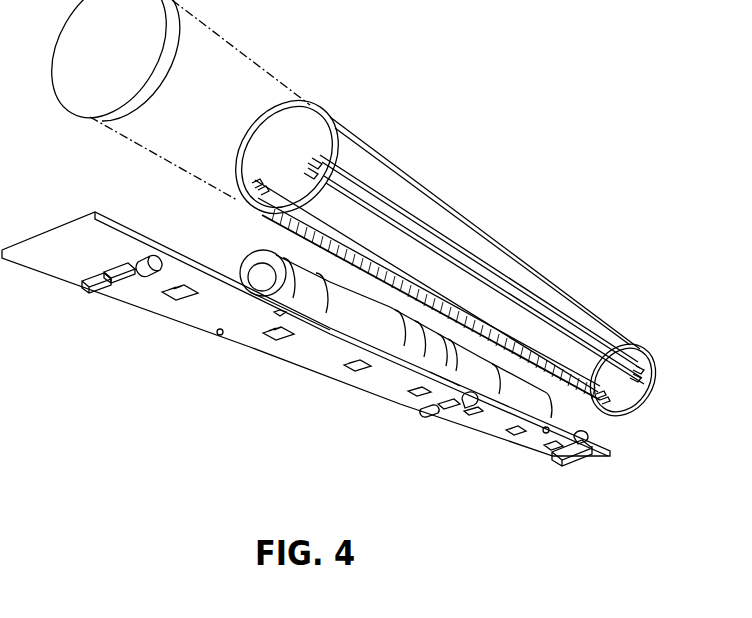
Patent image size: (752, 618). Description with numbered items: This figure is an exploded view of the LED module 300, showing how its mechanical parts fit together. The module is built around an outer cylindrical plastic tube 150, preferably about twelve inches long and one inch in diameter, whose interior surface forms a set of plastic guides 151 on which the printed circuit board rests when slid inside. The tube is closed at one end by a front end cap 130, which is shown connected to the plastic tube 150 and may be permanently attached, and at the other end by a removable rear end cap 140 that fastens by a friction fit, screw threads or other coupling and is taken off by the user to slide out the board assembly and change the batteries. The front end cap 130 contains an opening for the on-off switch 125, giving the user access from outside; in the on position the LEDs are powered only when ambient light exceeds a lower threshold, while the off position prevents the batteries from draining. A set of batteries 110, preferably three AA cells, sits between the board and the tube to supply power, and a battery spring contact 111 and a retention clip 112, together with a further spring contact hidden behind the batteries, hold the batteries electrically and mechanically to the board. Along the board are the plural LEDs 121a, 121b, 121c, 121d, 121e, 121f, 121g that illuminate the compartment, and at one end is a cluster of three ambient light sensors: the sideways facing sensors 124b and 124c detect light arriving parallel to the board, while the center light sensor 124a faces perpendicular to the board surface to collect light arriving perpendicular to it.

The LED module 300 is at (556, 122).
The rear end cap 140 is at (65, 100).
The outer cylindrical plastic tube 150 is at (243, 148).
The plastic guides 151 is at (315, 158).
The front end cap 130 is at (643, 347).
The batteries 110 is at (283, 253).
The battery spring contact 111 is at (235, 265).
The retention clip 112 is at (443, 377).
The center light sensor 124a is at (117, 263).
The sideways facing light sensor 124b is at (103, 290).
The sideways facing light sensor 124c is at (150, 258).
The LED 121a is at (550, 448).
The LED 121b is at (513, 437).
The LED 121c is at (472, 416).
The LED 121d is at (420, 393).
The LED 121e is at (353, 368).
The LED 121f is at (282, 342).
The LED 121g is at (180, 300).
The on-off switch 125 is at (593, 435).